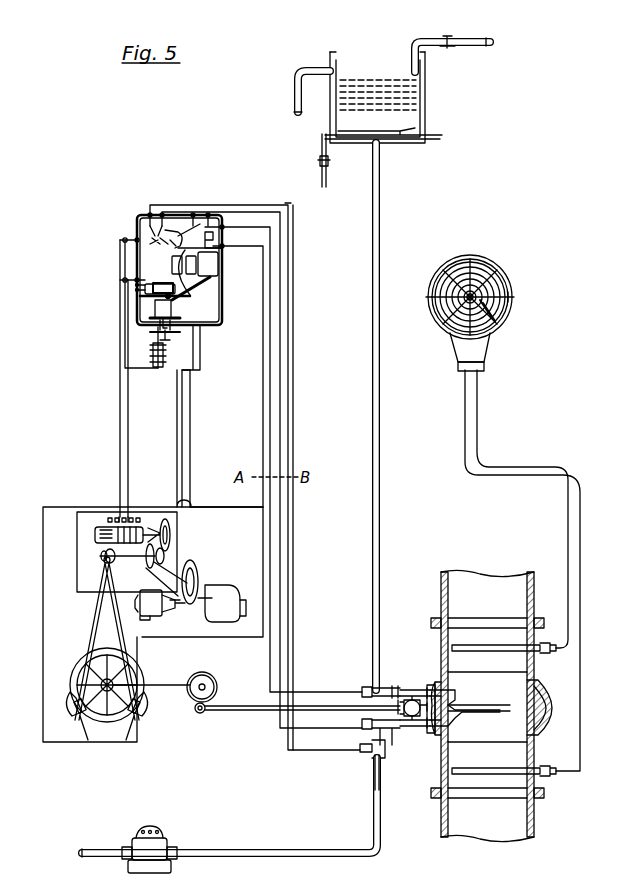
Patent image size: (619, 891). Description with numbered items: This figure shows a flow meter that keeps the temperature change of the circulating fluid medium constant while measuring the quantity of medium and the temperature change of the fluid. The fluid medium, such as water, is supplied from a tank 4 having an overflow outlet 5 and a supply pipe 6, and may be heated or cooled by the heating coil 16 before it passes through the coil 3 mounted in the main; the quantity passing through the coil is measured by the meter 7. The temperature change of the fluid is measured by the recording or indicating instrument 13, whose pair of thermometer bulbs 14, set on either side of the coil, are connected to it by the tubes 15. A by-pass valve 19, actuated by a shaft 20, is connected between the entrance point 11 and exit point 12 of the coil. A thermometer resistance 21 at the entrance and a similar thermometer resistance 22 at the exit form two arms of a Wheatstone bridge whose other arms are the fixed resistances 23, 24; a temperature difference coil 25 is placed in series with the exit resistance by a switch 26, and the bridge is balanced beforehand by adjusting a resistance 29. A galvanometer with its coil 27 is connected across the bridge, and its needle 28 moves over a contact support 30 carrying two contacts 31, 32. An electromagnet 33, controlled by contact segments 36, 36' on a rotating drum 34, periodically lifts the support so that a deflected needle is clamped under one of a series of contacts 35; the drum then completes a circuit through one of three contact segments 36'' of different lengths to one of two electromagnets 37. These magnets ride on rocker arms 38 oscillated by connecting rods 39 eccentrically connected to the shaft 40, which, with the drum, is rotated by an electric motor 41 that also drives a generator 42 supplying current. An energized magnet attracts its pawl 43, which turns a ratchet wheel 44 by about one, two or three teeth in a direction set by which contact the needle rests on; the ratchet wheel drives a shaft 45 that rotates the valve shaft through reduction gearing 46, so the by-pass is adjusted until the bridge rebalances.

The coil 3 is at (538, 700).
The tank 4 is at (425, 80).
The overflow outlet 5 is at (294, 97).
The supply pipe 6 is at (468, 40).
The meter 7 is at (155, 850).
The entrance point of the coil 11 is at (383, 688).
The exit point of the coil 12 is at (375, 730).
The recording or indicating instrument 13 is at (510, 308).
The thermometer bulbs 14 is at (479, 646).
The tubes 15 is at (525, 476).
The heating coil 16 is at (380, 131).
The by-pass valve 19 is at (411, 689).
The valve shaft 20 is at (240, 708).
The thermometer resistance 21 is at (370, 690).
The thermometer resistance 22 is at (398, 728).
The fixed resistance 23 is at (172, 228).
The fixed resistance 24 is at (182, 235).
The temperature difference coil 25 is at (372, 766).
The switch 26 is at (135, 243).
The galvanometer coil 27 is at (222, 266).
The galvanometer needle 28 is at (180, 300).
The adjustable resistance 29 is at (208, 235).
The contact support 30 is at (175, 313).
The contact 31 is at (150, 300).
The contact 32 is at (175, 300).
The electromagnet 33 is at (152, 356).
The rotating drum 34 is at (100, 553).
The contacts 35 is at (140, 296).
The contact segment 36 is at (111, 529).
The contact segment 36' is at (150, 513).
The contact segments 36'' is at (156, 532).
The electromagnets 37 is at (124, 726).
The rocker arms 38 is at (100, 640).
The connecting rods 39 is at (108, 578).
The shaft 40 is at (130, 560).
The electric motor 41 is at (212, 590).
The generator 42 is at (148, 620).
The pawl 43 is at (66, 712).
The ratchet wheel 44 is at (140, 670).
The shaft 45 is at (166, 685).
The reduction gearing 46 is at (208, 700).